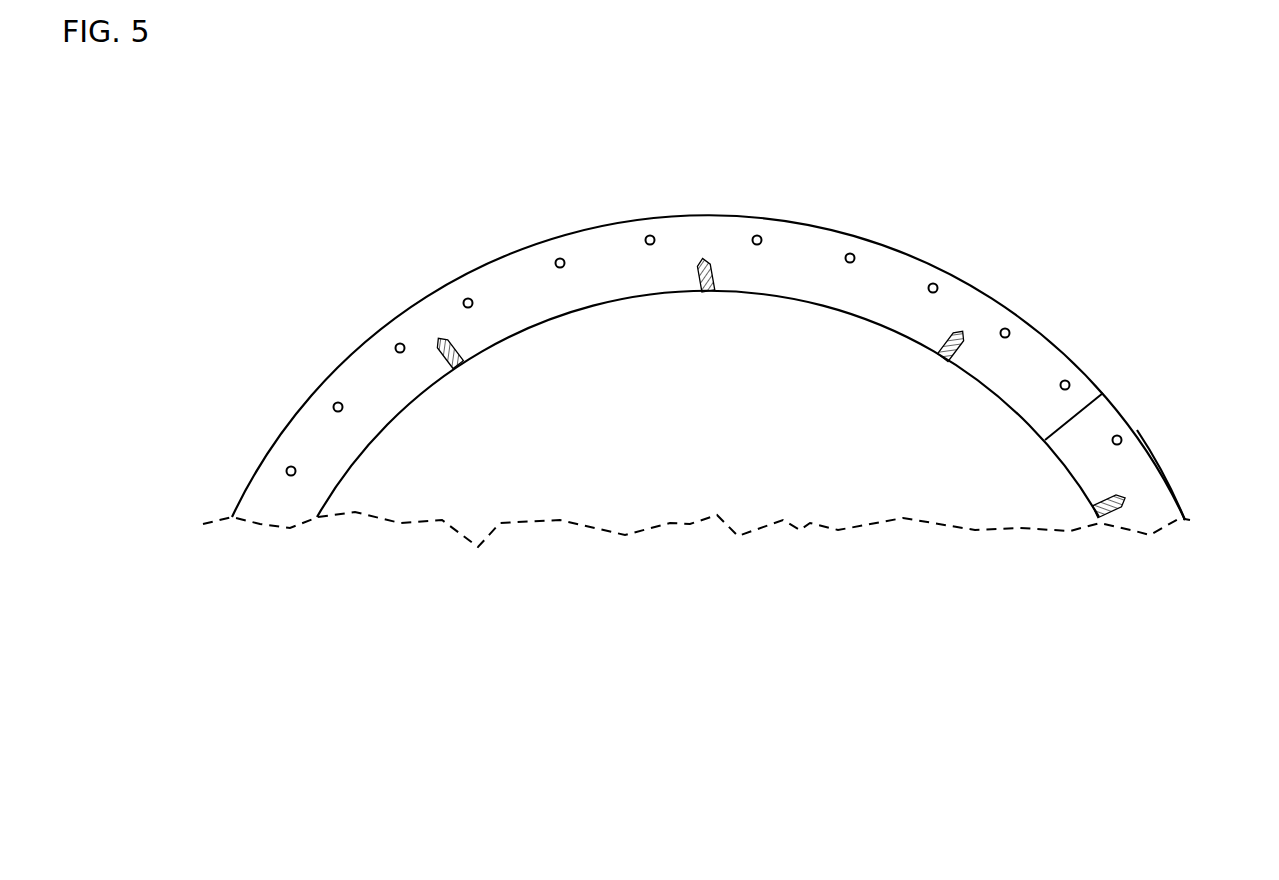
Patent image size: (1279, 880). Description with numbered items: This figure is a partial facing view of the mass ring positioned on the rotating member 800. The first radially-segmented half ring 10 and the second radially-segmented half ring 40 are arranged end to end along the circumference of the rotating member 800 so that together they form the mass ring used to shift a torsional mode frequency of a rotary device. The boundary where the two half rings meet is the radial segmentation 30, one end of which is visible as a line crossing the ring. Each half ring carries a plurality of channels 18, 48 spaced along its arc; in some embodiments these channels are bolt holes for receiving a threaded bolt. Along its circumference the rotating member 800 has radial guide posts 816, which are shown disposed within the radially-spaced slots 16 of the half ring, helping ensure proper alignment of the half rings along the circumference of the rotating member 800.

The first radially-segmented half ring 10 is at (445, 275).
The radially-spaced slots 16 is at (717, 262).
The channels 18 is at (562, 259).
The radial segmentation 30 is at (1110, 385).
The second radially-segmented half ring 40 is at (1167, 465).
The channels 48 is at (1121, 437).
The rotating member 800 is at (727, 448).
The radial guide posts 816 is at (705, 290).